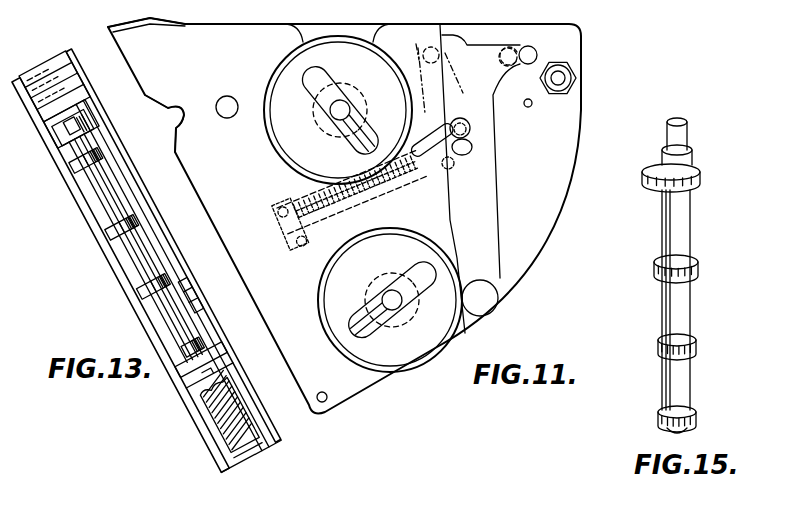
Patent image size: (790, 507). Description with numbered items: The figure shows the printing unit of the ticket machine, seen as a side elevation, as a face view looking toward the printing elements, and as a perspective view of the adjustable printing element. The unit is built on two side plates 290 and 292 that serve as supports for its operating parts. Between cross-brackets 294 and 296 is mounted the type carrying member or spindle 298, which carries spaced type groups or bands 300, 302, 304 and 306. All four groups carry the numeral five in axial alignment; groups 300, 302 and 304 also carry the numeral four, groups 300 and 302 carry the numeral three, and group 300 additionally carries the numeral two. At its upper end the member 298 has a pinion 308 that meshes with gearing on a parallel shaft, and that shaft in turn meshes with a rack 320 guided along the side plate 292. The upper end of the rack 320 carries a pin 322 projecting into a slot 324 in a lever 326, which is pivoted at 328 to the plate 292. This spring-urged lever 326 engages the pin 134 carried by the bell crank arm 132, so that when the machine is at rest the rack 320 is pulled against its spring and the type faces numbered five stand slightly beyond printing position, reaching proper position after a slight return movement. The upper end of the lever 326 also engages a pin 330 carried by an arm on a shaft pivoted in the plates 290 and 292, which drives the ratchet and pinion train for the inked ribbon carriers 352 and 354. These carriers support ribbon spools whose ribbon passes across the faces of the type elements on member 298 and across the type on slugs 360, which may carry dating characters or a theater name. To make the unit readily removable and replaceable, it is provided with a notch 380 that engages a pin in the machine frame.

In FIG. 11, the bell crank arm 132 is at (418, 46).
In FIG. 11, the pin 134 is at (433, 47).
In FIG. 11, the side plate 290 is at (358, 30).
In FIG. 13, the side plate 290 is at (115, 273).
In FIG. 11, the side plate 292 is at (240, 31).
In FIG. 13, the side plate 292 is at (173, 243).
In FIG. 13, the cross-bracket 294 is at (80, 148).
In FIG. 13, the cross-bracket 296 is at (218, 348).
In FIG. 13, the type carrying member 298 is at (107, 200).
In FIG. 15, the type carrying member 298 is at (690, 223).
In FIG. 13, the type group 300 is at (68, 167).
In FIG. 15, the type group 300 is at (700, 178).
In FIG. 13, the type group 302 is at (103, 233).
In FIG. 15, the type group 302 is at (698, 266).
In FIG. 13, the type group 304 is at (148, 288).
In FIG. 15, the type group 304 is at (695, 338).
In FIG. 13, the type group 306 is at (183, 352).
In FIG. 15, the type group 306 is at (695, 411).
In FIG. 13, the pinion 308 is at (62, 145).
In FIG. 11, the rack 320 is at (312, 208).
In FIG. 13, the rack 320 is at (190, 288).
In FIG. 11, the pin 322 is at (471, 130).
In FIG. 11, the slot 324 is at (471, 148).
In FIG. 11, the lever 326 is at (492, 184).
In FIG. 11, the pivot 328 is at (490, 299).
In FIG. 11, the pin 330 is at (537, 53).
In FIG. 11, the inked ribbon carrier 352 is at (405, 319).
In FIG. 11, the inked ribbon carrier 354 is at (357, 90).
In FIG. 13, the slug 360 is at (68, 78).
In FIG. 11, the notch 380 is at (178, 104).